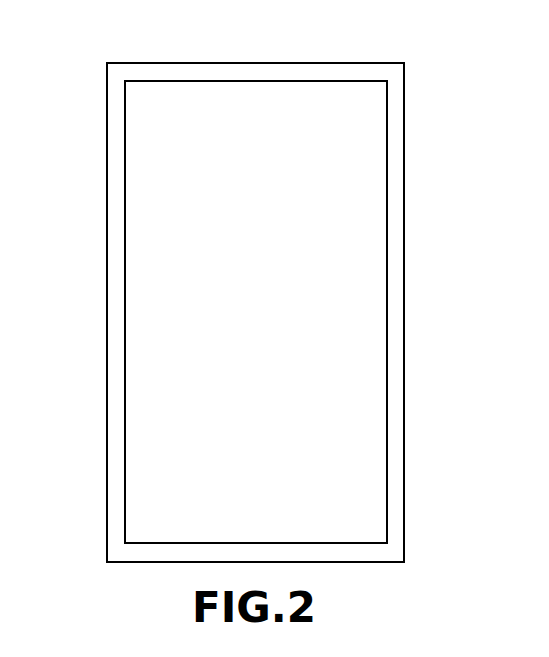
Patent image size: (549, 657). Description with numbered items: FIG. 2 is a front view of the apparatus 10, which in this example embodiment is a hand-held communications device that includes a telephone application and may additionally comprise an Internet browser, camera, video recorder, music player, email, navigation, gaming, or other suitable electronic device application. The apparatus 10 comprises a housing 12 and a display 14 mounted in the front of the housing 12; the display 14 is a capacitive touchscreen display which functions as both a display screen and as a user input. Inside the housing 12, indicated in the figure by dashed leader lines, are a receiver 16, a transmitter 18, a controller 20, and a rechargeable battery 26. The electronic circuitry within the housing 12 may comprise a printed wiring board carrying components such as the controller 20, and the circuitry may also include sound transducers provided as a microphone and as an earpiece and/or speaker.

The apparatus 10 is at (417, 48).
The housing 12 is at (106, 132).
The display 14 is at (379, 236).
The receiver 16 is at (106, 190).
The transmitter 18 is at (106, 251).
The controller 20 is at (106, 305).
The rechargeable battery 26 is at (106, 348).